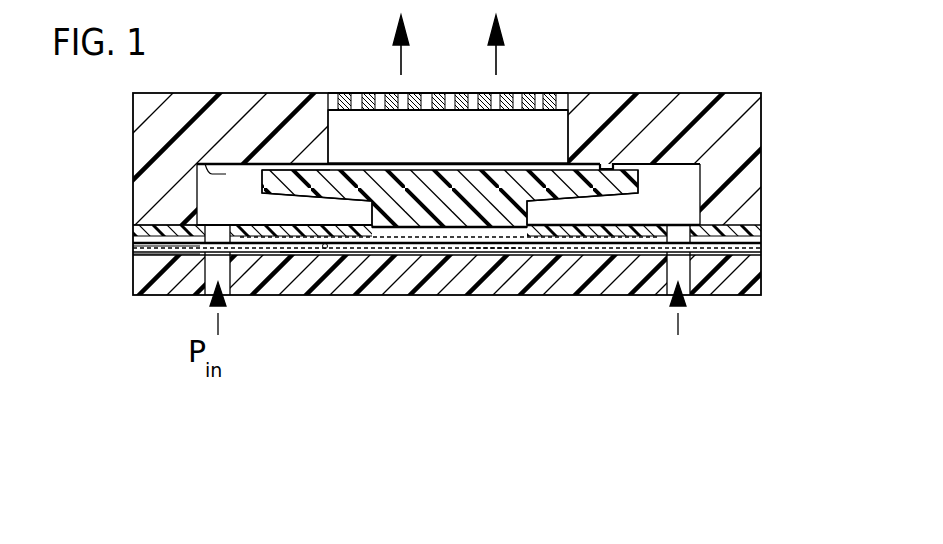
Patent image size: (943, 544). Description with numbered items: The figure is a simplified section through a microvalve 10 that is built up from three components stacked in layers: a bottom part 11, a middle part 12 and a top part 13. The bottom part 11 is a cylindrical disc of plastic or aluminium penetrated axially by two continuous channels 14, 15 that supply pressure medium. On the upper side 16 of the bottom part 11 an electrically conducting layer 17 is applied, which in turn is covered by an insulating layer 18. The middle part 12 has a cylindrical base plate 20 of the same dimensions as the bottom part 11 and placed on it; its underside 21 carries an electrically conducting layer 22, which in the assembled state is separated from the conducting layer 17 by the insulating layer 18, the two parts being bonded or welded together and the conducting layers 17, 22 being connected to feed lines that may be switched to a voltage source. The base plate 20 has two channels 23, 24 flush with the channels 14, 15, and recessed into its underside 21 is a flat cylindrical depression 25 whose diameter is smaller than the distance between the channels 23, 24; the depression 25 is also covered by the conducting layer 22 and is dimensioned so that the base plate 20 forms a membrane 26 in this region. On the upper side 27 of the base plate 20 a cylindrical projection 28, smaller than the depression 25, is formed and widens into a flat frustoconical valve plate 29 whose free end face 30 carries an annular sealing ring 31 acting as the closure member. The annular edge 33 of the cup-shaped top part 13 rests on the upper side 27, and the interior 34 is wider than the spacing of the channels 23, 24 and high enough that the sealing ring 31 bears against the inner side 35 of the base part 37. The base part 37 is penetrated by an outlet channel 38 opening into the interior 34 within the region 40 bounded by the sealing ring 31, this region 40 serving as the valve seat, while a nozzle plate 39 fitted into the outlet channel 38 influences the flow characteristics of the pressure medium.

The microvalve 10 is at (632, 72).
The bottom part 11 is at (580, 277).
The middle part 12 is at (770, 234).
The top part 13 is at (750, 130).
The channel 14 is at (212, 291).
The channel 15 is at (683, 273).
The upper side of the bottom part 16 is at (140, 245).
The electrically conducting layer 17 is at (297, 257).
The insulating layer 18 is at (325, 249).
The base plate 20 is at (185, 229).
The underside of the base plate 21 is at (140, 254).
The electrically conducting layer 22 is at (380, 240).
The channel 23 is at (196, 218).
The channel 24 is at (680, 240).
The depression 25 is at (488, 253).
The membrane 26 is at (614, 219).
The upper side of the base plate 27 is at (250, 223).
The projection 28 is at (480, 203).
The valve plate 29 is at (297, 180).
The free end face 30 is at (582, 152).
The sealing ring 31 is at (620, 160).
The annular edge 33 is at (737, 193).
The interior 34 is at (682, 177).
The inner side 35 is at (197, 182).
The base part 37 is at (693, 97).
The outlet channel 38 is at (568, 138).
The nozzle plate 39 is at (520, 97).
The region bounded by the sealing ring 40 is at (483, 203).